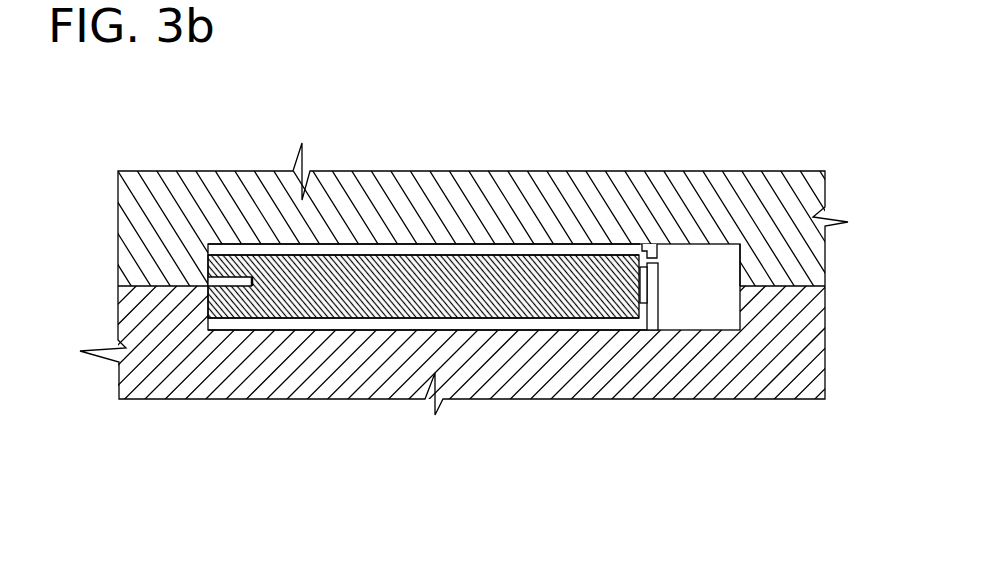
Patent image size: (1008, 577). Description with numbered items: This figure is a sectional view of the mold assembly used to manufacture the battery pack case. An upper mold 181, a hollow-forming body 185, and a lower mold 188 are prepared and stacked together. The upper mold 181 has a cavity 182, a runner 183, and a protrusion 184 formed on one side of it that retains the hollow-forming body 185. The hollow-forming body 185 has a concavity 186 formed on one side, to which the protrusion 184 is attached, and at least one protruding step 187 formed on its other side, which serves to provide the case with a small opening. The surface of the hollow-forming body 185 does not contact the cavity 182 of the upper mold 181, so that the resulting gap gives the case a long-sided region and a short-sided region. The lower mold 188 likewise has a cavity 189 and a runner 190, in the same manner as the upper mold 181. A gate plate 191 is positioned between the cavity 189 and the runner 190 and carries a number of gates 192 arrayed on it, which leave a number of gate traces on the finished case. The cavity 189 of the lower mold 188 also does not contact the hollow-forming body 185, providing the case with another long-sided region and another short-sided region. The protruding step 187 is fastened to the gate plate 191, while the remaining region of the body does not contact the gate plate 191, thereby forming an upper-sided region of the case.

The upper mold 181 is at (385, 192).
The cavity 182 is at (500, 247).
The runner 183 is at (745, 254).
The protrusion 184 is at (233, 270).
The hollow-forming body 185 is at (357, 302).
The concavity 186 is at (231, 283).
The protruding step 187 is at (650, 292).
The lower mold 188 is at (592, 377).
The cavity 189 is at (523, 328).
The runner 190 is at (740, 318).
The gate plate 191 is at (658, 277).
The gates 192 is at (656, 258).